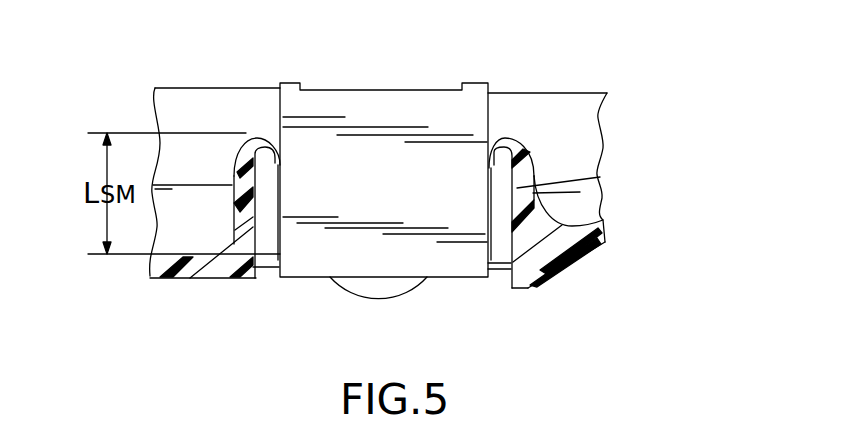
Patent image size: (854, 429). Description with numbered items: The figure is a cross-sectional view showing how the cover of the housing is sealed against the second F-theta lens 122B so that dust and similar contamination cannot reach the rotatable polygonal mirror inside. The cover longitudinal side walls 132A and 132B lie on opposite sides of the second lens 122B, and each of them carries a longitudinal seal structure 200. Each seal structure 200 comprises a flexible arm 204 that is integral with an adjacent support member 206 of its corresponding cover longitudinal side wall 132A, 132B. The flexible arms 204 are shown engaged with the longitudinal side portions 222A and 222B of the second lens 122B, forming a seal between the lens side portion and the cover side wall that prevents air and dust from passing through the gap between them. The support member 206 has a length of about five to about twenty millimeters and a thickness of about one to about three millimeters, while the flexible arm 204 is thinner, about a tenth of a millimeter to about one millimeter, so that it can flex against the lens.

The second F-2 lens 122B is at (380, 118).
The cover longitudinal side wall 132A is at (540, 287).
The cover longitudinal side wall 132B is at (233, 282).
The longitudinal seal structure 200 is at (257, 132).
The flexible arm 204 is at (282, 160).
The support member 206 is at (238, 172).
The longitudinal side portion 222A is at (500, 222).
The longitudinal side portion 222B is at (276, 228).